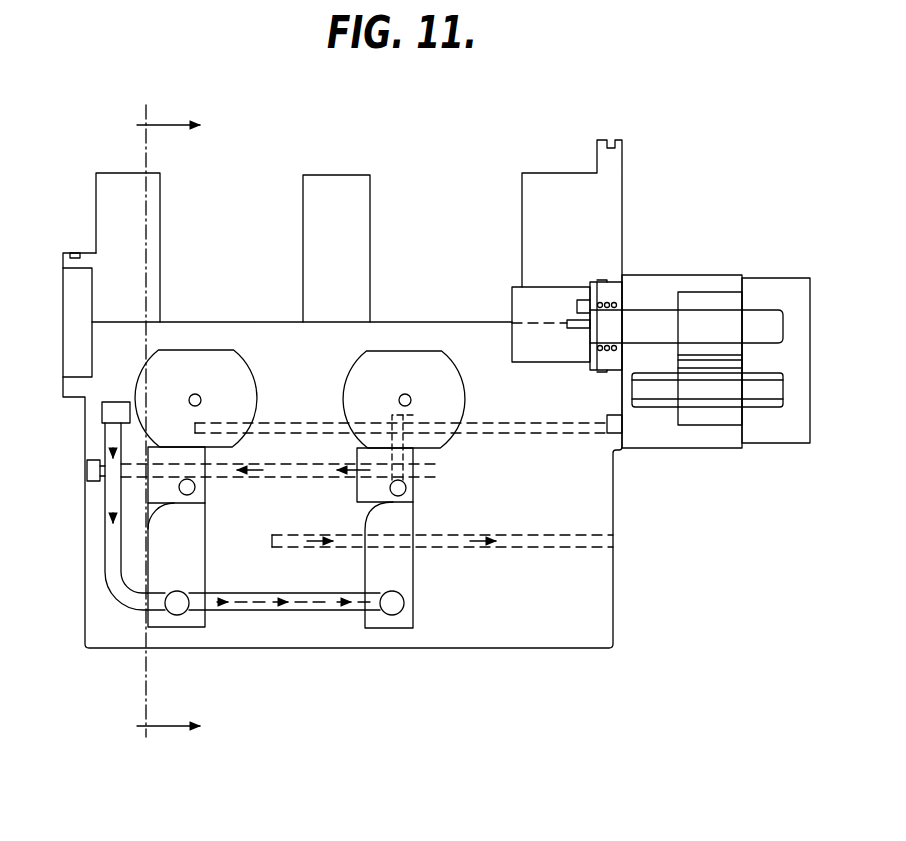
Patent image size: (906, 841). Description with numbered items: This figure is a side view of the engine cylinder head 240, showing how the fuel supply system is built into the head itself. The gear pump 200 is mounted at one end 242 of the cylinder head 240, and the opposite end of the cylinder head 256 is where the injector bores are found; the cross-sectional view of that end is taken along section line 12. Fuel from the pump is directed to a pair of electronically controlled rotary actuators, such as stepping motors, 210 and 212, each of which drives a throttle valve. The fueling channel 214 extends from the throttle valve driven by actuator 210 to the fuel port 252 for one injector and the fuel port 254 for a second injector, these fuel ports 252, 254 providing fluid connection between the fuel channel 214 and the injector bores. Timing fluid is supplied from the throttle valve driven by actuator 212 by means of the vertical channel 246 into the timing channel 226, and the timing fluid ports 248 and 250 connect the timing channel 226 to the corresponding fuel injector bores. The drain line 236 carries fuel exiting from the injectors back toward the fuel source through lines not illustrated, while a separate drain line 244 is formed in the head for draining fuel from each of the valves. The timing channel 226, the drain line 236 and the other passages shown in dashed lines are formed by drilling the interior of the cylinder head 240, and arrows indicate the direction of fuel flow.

The section line 12— 12 is at (168, 427).
The gear pump 200 is at (723, 275).
The rotary actuator 210 is at (200, 357).
The rotary actuator 212 is at (415, 362).
The fueling channel 214 is at (108, 542).
The timing channel 226 is at (277, 480).
The drain line 236 is at (542, 548).
The engine cylinder head 240 is at (408, 232).
The end of the cylinder head 242 is at (613, 507).
The drain line 244 is at (560, 433).
The vertical channel 246 is at (420, 440).
The timing fluid port 248 is at (190, 495).
The timing fluid port 250 is at (400, 495).
The fuel port 252 is at (160, 607).
The fuel port 254 is at (395, 613).
The end of the cylinder head 256 is at (83, 438).